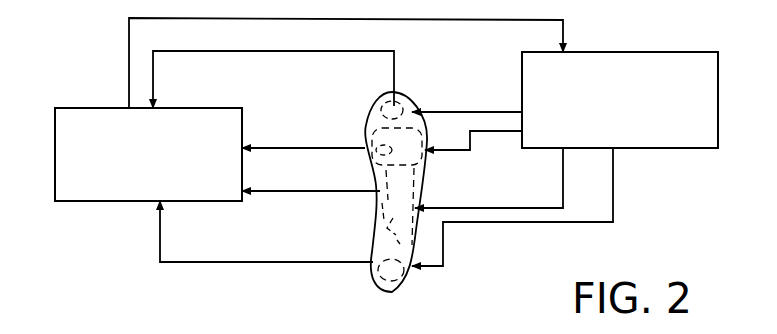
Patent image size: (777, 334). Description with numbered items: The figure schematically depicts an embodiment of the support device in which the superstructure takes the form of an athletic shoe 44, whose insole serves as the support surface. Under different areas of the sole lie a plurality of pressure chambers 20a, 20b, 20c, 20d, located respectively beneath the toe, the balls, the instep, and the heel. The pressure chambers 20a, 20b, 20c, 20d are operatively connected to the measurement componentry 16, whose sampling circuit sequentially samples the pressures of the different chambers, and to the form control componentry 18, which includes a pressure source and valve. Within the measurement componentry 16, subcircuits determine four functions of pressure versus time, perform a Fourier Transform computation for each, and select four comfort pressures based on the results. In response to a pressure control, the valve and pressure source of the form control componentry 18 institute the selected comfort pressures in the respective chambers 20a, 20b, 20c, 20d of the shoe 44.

The measurement componentry 16 is at (107, 107).
The form control componentry 18 is at (645, 52).
The pressure chamber 20a is at (366, 108).
The pressure chamber 20b is at (366, 163).
The pressure chamber 20c is at (382, 228).
The pressure chamber 20d is at (378, 287).
The athletic shoe 44 is at (413, 280).